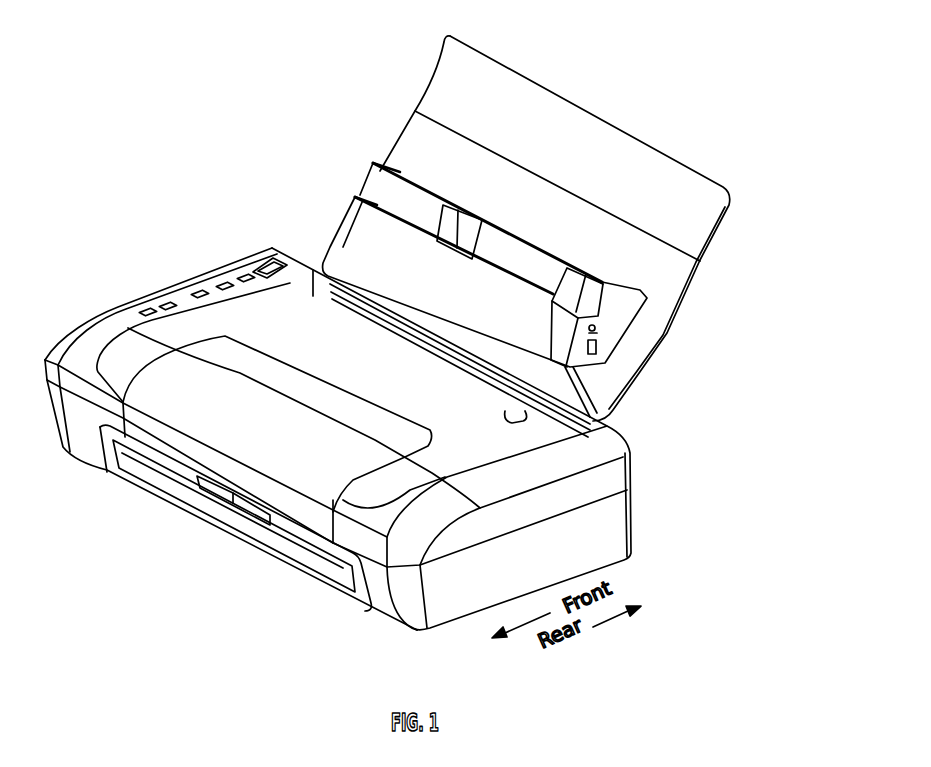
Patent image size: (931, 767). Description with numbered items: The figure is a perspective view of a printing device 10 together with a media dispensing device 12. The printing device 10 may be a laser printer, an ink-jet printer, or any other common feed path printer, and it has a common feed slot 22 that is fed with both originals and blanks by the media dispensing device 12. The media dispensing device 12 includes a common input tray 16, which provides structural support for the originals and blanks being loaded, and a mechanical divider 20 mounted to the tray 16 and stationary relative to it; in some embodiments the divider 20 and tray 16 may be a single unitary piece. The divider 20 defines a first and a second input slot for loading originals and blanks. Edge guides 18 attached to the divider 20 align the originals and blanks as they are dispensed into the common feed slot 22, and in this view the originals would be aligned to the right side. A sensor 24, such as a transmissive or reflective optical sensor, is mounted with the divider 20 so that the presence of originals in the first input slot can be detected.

The printing device 10 is at (613, 535).
The media dispensing device 12 is at (429, 333).
The common input tray 16 is at (588, 110).
The edge guides 18 is at (453, 205).
The mechanical divider 20 is at (366, 179).
The common feed slot 22 is at (313, 293).
The sensor 24 is at (606, 342).